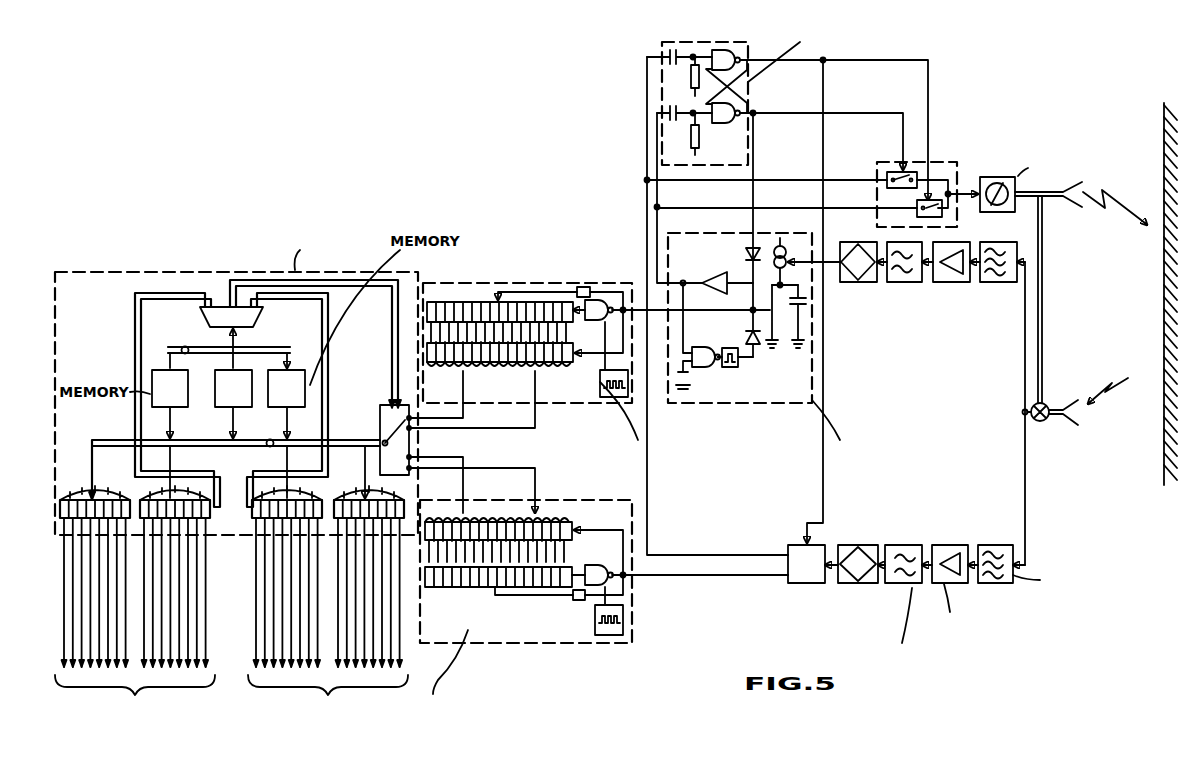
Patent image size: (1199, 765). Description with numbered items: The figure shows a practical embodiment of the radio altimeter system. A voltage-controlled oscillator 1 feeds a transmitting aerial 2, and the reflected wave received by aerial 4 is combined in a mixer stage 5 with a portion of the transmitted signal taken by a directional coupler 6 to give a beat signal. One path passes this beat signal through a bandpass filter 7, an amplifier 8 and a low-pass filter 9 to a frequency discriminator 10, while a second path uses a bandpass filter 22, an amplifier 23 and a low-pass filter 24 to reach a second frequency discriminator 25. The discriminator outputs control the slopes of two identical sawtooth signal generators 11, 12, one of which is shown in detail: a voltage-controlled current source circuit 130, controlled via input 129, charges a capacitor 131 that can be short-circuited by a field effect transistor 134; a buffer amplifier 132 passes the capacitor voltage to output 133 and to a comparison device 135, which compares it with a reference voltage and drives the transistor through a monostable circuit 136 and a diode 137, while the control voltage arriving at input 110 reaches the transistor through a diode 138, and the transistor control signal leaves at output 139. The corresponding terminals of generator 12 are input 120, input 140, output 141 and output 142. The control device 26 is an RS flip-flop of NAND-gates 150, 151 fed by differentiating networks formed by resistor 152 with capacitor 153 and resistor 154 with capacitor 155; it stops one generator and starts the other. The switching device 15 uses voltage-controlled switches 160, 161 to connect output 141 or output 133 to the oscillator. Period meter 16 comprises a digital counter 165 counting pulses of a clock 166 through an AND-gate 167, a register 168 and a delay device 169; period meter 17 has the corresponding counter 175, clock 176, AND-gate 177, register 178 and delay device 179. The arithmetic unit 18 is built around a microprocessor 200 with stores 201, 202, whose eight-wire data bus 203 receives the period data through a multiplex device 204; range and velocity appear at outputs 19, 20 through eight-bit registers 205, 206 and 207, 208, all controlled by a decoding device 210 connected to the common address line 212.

The voltage-controlled oscillator 1 is at (999, 176).
The aerial 2 is at (1082, 190).
The aerial 4 is at (1083, 420).
The mixer stage 5 is at (1031, 413).
The directional coupler 6 is at (1042, 206).
The bandpass filter 7 is at (1000, 282).
The amplifier 8 is at (952, 282).
The low-pass filter 9 is at (906, 282).
The frequency discriminator 10 is at (868, 282).
The controllable sawtooth signal generator 11 is at (784, 406).
The controllable sawtooth signal generator 12 is at (809, 585).
The switching device 15 is at (950, 162).
The period meter 16 is at (572, 408).
The period meter 17 is at (518, 638).
The arithmetic unit 18 is at (257, 272).
The output 19 is at (135, 697).
The output 20 is at (328, 697).
The bandpass filter 22 is at (1004, 586).
The amplifier 23 is at (954, 586).
The low-pass filter 24 is at (904, 586).
The frequency discriminator 25 is at (848, 546).
The control device 26 is at (748, 86).
The input 110 is at (750, 242).
The input 120 is at (807, 541).
The input 129 is at (808, 263).
The voltage-controlled current source circuit 130 is at (783, 253).
The capacitor 131 is at (808, 306).
The buffer amplifier 132 is at (706, 282).
The output 133 is at (676, 285).
The field effect transistor 134 is at (774, 346).
The comparison device 135 is at (714, 351).
The monostable circuit 136 is at (745, 370).
The diode 137 is at (748, 333).
The diode 138 is at (734, 250).
The output 139 is at (654, 350).
The input 140 is at (832, 570).
The output 141 is at (770, 550).
The output 142 is at (786, 583).
The NAND-gate 150 is at (740, 54).
The NAND-gate 151 is at (722, 128).
The resistor 152 is at (690, 80).
The capacitor 153 is at (647, 55).
The resistor 154 is at (698, 145).
The capacitor 155 is at (652, 110).
The voltage-controlled switch 160 is at (898, 172).
The voltage-controlled switch 161 is at (946, 218).
The digital counter 165 is at (447, 306).
The clock 166 is at (596, 359).
The AND-gate 167 is at (663, 322).
The register 168 is at (500, 367).
The delay device 169 is at (585, 286).
The digital counter 175 is at (448, 590).
The clock 176 is at (595, 622).
The AND-gate 177 is at (599, 566).
The register 178 is at (498, 520).
The delay device 179 is at (573, 600).
The microprocessor 200 is at (250, 390).
The store 201 is at (305, 388).
The store 202 is at (185, 393).
The data bus 203 is at (268, 446).
The multiplex device 204 is at (380, 435).
The eight-bit register 205 is at (100, 490).
The eight-bit register 206 is at (187, 486).
The eight-bit register 207 is at (252, 514).
The eight-bit register 208 is at (342, 484).
The decoding device 210 is at (262, 317).
The common address line 212 is at (185, 348).